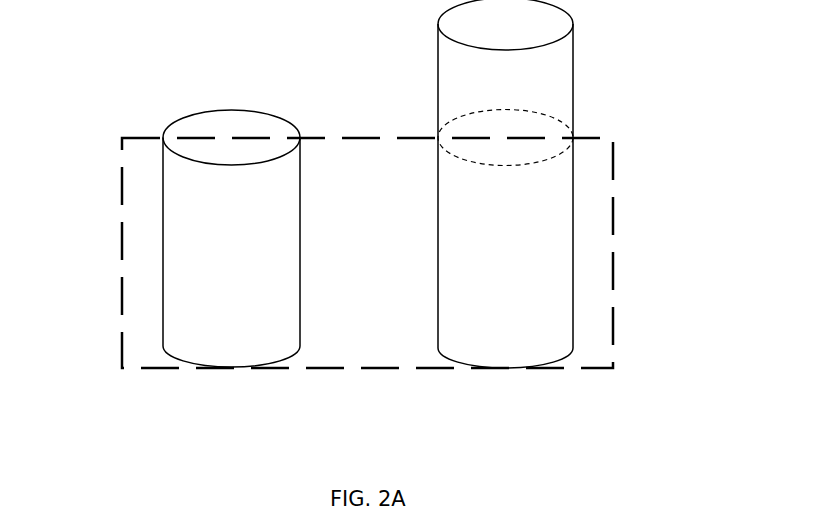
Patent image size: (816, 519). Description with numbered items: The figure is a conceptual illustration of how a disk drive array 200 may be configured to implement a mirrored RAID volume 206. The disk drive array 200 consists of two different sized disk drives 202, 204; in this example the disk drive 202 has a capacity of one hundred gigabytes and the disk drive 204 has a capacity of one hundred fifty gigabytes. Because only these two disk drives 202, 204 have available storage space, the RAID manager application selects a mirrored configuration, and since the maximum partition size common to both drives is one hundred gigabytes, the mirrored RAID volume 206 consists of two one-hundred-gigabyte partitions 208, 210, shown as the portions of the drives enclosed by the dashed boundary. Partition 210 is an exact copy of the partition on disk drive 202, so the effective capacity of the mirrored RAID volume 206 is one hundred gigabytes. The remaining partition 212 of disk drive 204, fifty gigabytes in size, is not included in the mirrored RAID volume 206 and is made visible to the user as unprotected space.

The disk drive array 200 is at (137, 84).
The disk drive 202 is at (175, 368).
The disk drive 204 is at (443, 355).
The RAID 1 volume 206 is at (613, 245).
The partition 208 is at (163, 175).
The partition 210 is at (575, 163).
The partition 212 is at (573, 36).